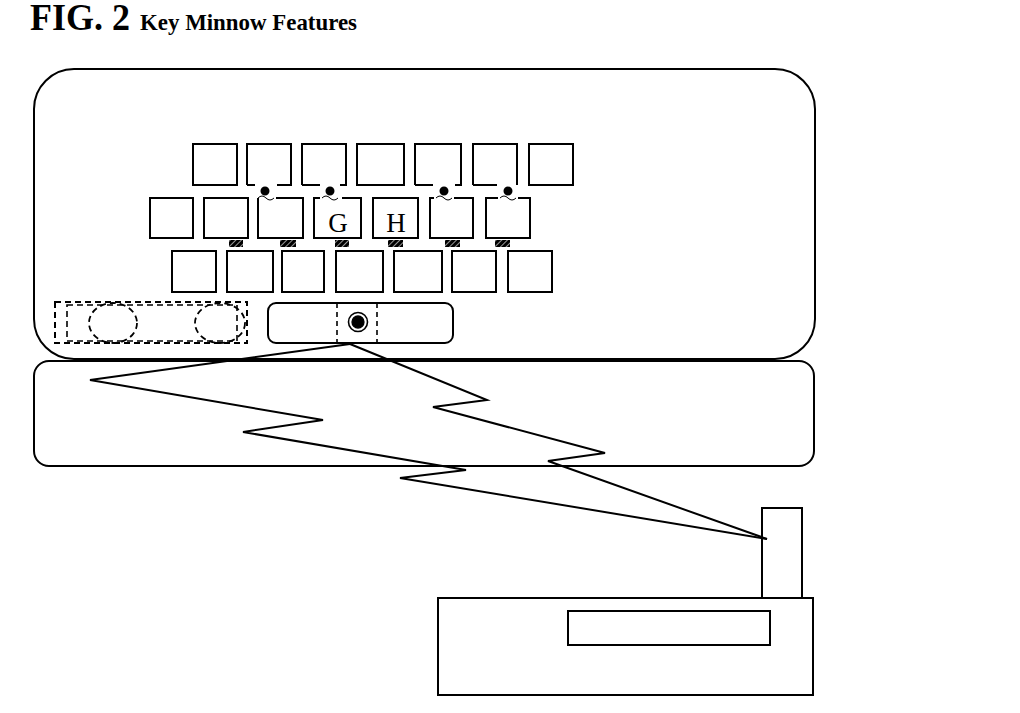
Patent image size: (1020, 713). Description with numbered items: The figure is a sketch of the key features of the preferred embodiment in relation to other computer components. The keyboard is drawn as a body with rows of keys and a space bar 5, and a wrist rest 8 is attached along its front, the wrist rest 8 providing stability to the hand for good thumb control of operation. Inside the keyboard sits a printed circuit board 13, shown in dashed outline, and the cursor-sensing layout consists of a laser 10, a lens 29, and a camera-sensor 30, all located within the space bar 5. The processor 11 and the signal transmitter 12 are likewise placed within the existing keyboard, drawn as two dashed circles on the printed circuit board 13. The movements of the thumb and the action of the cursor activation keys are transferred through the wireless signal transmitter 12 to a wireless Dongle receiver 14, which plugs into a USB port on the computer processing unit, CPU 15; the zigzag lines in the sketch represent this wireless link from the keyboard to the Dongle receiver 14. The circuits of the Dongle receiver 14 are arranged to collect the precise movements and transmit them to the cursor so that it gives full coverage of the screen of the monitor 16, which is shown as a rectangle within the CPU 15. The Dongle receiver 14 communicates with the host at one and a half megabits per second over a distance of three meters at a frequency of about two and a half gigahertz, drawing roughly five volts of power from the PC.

The space bar 5 is at (466, 300).
The wrist rest 8 is at (662, 421).
The laser 10 is at (374, 343).
The processor 11 is at (98, 342).
The signal transmitter 12 is at (207, 342).
The printed circuit board 13 is at (152, 301).
The wireless Dongle receiver 14 is at (755, 542).
The CPU 15 is at (480, 681).
The monitor 16 is at (574, 628).
The lens 29 is at (385, 318).
The camera-sensor 30 is at (346, 342).